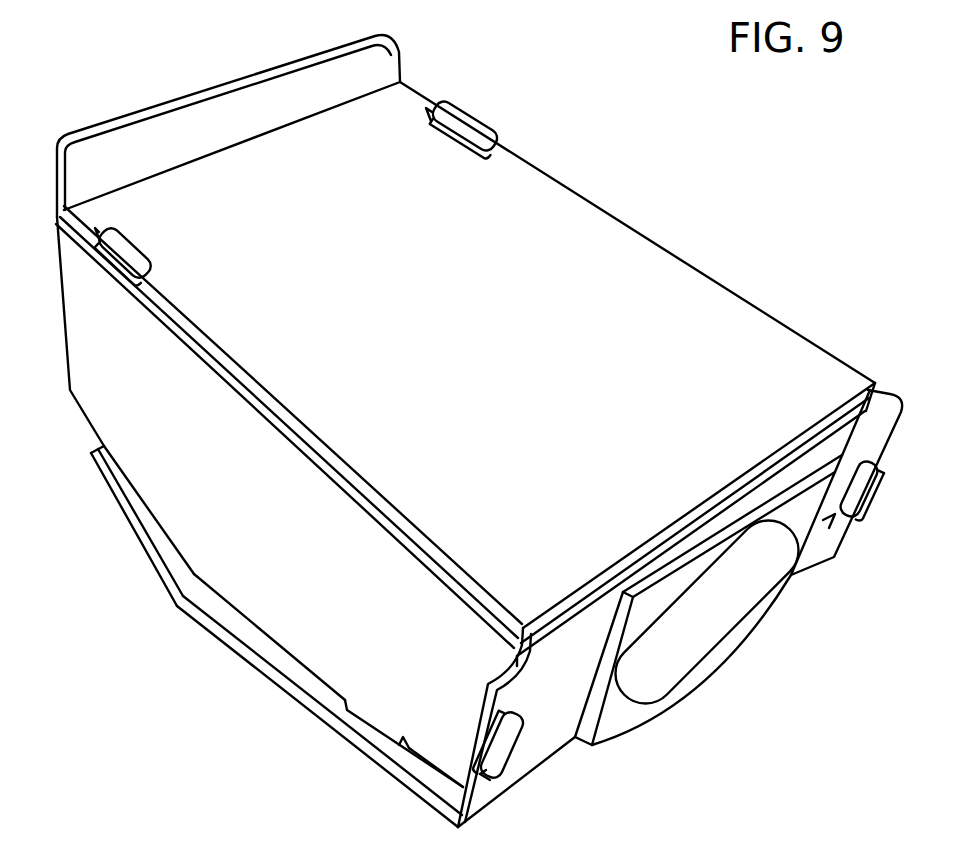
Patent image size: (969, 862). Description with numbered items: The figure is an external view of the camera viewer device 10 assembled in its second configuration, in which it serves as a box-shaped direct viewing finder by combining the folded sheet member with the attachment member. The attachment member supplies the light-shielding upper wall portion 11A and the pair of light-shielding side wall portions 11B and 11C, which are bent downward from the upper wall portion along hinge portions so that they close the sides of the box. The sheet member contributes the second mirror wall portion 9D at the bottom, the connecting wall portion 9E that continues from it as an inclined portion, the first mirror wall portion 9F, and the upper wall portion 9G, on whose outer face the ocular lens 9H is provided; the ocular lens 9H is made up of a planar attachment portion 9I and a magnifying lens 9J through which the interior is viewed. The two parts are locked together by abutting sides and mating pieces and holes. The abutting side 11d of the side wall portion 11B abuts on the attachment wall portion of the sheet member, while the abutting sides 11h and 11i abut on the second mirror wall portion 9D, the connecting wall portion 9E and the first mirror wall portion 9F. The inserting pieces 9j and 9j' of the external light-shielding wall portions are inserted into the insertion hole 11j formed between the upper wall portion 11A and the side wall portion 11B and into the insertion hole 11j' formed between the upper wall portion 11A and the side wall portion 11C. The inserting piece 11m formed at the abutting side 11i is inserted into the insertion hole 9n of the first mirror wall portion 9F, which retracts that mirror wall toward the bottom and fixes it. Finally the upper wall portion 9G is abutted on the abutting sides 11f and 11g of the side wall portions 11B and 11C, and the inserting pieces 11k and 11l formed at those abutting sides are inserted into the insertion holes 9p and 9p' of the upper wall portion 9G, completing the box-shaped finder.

The camera viewer device 10 is at (658, 196).
The light-shielding upper wall portion 11A is at (212, 92).
The light-shielding side wall portion 11C is at (289, 122).
The abutting side 11g is at (870, 395).
The inserting piece 9j is at (150, 255).
The inserting piece 9j' is at (470, 105).
The insertion hole 11j is at (132, 217).
The insertion hole 11j' is at (487, 115).
The abutting side 11d is at (63, 383).
The abutting side 11h is at (128, 480).
The second mirror wall portion 9D is at (146, 530).
The light-shielding side wall portion 11B is at (195, 572).
The connecting wall portion 9E is at (238, 628).
The first mirror wall portion 9F is at (333, 703).
The insertion hole 9n is at (365, 722).
The inserting piece 11m is at (372, 752).
The abutting side 11i is at (432, 788).
The abutting side 11f is at (515, 647).
The insertion hole 9p is at (499, 774).
The insertion hole 9p' is at (854, 540).
The inserting piece 11k is at (518, 760).
The inserting piece 11l is at (875, 490).
The ocular lens 9H is at (740, 760).
The planar attachment portion 9I is at (640, 728).
The magnifying lens 9J is at (670, 675).
The upper wall portion 9G is at (803, 568).